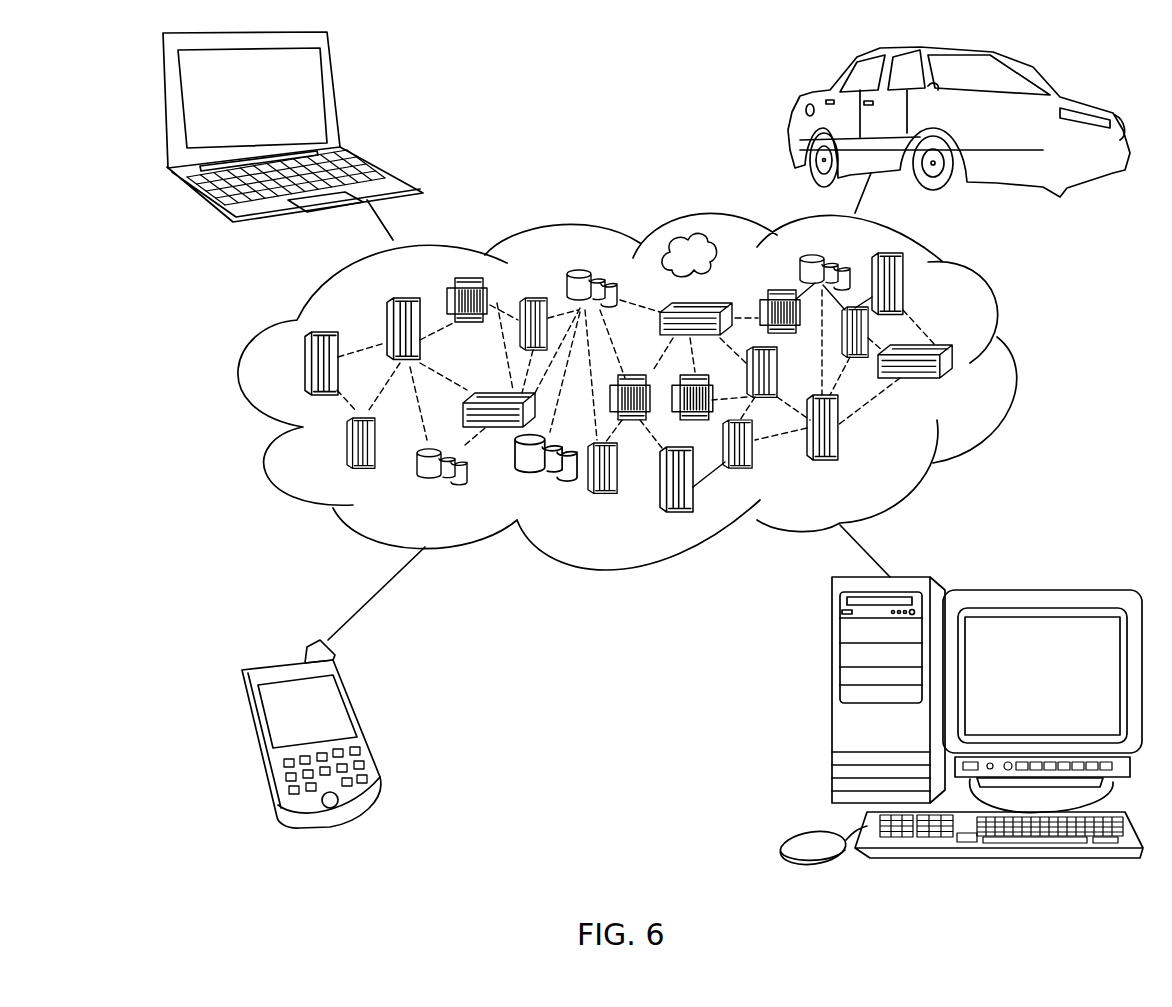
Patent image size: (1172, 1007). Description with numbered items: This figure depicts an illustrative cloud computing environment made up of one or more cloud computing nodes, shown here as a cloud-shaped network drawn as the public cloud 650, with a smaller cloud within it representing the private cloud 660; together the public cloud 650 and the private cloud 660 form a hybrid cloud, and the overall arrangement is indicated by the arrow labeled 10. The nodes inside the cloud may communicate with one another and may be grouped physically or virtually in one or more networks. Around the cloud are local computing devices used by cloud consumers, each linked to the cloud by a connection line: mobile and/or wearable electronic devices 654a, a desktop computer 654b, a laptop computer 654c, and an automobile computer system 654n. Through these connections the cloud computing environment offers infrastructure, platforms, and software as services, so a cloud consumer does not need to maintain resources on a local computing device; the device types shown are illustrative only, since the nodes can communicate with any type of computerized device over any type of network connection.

The system 10 is at (970, 385).
The public cloud 650 is at (1000, 307).
The private cloud 660 is at (690, 258).
The mobile and/or wearable electronic devices 654a is at (365, 710).
The desktop computer 654b is at (830, 708).
The laptop computer 654c is at (338, 92).
The automobile computer system 654n is at (805, 97).